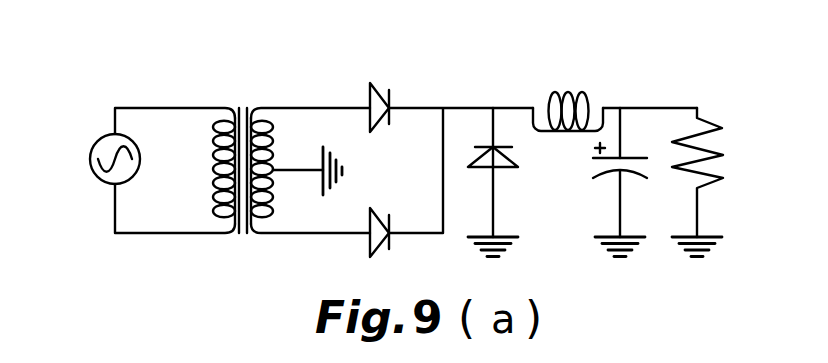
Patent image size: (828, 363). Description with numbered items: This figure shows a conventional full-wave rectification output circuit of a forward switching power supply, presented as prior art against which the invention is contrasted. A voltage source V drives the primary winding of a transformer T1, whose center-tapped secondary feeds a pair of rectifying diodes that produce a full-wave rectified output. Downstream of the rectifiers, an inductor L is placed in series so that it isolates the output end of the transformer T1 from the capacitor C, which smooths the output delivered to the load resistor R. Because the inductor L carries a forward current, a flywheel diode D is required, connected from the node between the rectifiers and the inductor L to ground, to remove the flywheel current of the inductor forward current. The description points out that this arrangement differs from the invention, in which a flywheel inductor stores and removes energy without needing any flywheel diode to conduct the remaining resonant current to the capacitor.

The voltage source V is at (140, 170).
The transformer T1 is at (291, 151).
The flywheel diode D is at (504, 182).
The inductor L is at (568, 93).
The capacitor C is at (605, 182).
The load resistor R is at (713, 182).